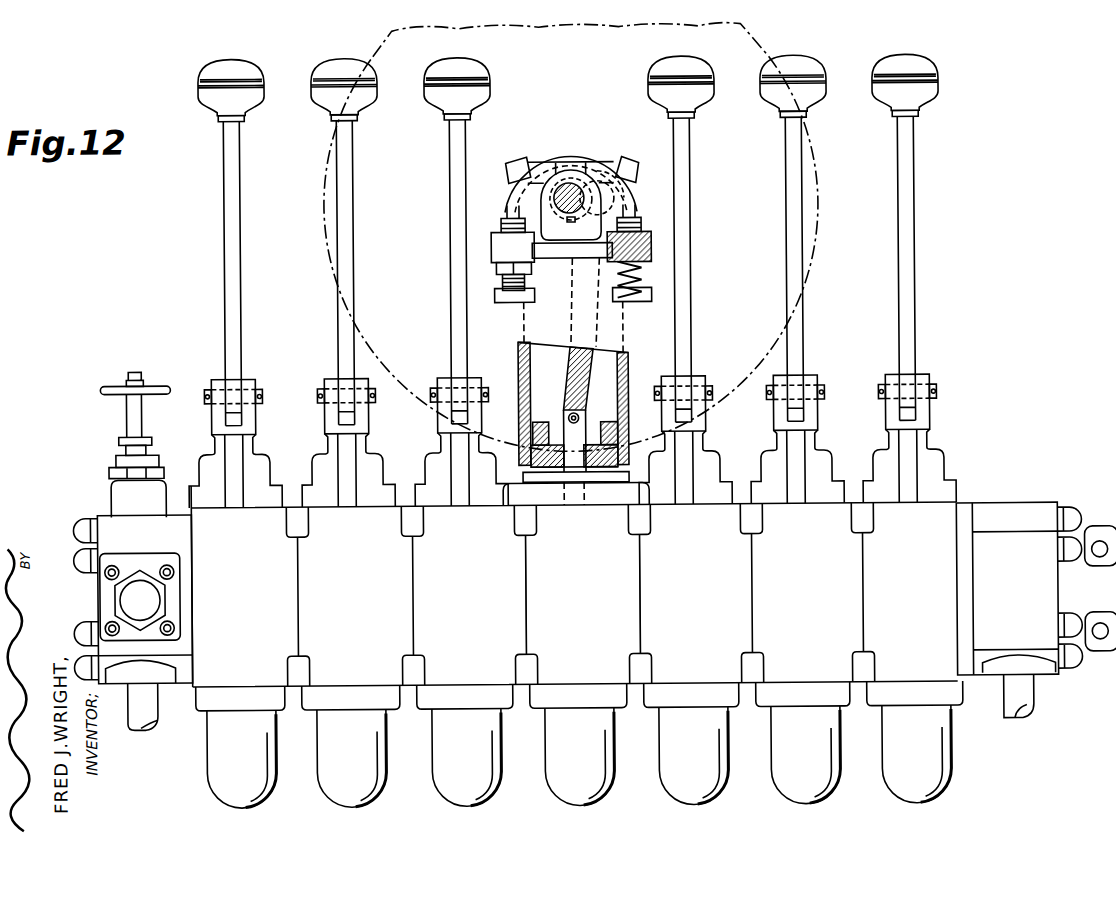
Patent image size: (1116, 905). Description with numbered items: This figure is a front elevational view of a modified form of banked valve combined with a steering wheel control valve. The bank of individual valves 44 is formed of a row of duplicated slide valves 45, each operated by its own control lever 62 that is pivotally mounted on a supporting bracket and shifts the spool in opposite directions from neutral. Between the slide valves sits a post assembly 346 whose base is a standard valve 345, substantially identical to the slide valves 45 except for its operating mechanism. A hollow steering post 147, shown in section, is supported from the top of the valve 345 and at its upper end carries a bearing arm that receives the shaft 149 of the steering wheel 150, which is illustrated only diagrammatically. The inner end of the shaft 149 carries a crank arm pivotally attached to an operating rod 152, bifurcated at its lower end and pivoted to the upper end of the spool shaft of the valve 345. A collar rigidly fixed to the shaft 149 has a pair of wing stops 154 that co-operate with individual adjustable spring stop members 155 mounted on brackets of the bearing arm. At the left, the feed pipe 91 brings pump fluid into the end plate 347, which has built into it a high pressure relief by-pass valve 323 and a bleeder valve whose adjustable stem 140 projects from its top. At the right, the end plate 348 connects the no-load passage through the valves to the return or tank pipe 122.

The bank of individual valves 44 is at (637, 757).
The slide valve 45 is at (200, 746).
The control lever 62 is at (229, 206).
The feed pipe 91 is at (143, 722).
The return or tank pipe 122 is at (1022, 712).
The adjustable stem 140 is at (133, 410).
The hollow steering post 147 is at (519, 358).
The shaft 149 is at (571, 190).
The steering wheel 150 is at (762, 42).
The operating rod 152 is at (567, 362).
The wing stops 154 is at (516, 157).
The adjustable spring stop members 155 is at (500, 236).
The high pressure relief by-pass valve 323 is at (180, 599).
The standard valve 345 is at (583, 594).
The post assembly 346 is at (633, 384).
The end plate 347 is at (126, 520).
The end plate 348 is at (1012, 510).